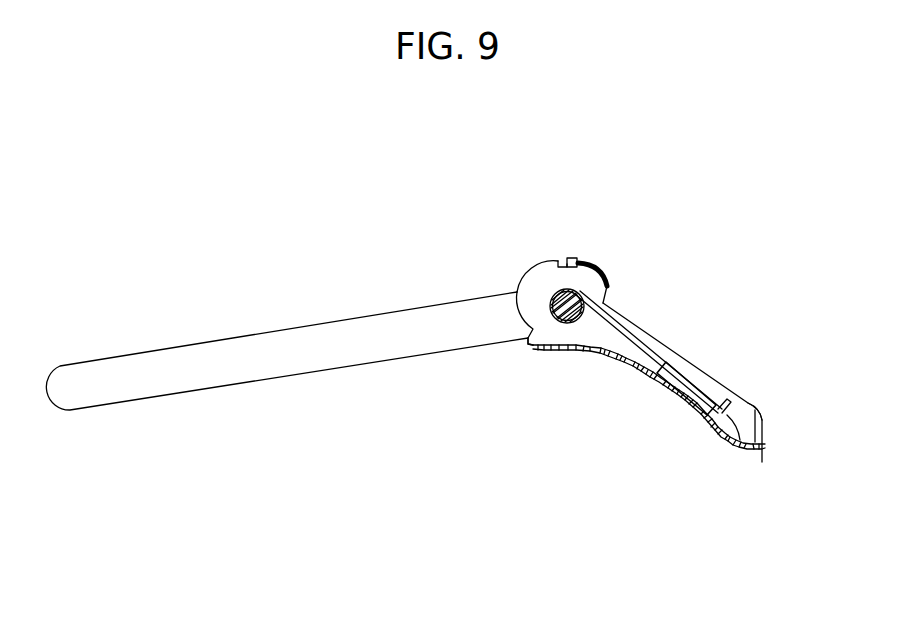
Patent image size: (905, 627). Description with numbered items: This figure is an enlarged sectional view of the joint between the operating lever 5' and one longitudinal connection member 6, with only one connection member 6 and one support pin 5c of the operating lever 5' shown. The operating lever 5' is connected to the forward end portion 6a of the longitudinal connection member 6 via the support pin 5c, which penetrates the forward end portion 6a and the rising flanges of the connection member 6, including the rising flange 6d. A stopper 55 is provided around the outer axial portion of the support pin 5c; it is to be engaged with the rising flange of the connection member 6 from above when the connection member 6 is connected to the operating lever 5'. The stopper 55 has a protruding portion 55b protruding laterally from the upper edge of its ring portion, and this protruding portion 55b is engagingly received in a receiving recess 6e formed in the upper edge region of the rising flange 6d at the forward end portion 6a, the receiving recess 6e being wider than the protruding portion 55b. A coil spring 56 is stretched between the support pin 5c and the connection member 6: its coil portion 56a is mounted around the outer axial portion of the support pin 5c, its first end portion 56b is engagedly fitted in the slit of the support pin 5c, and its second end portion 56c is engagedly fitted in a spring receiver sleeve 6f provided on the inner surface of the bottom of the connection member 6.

The operating lever 5' is at (287, 314).
The support pin 5c is at (529, 345).
The longitudinal connection member 6 is at (723, 438).
The forward end portion 6a is at (513, 273).
The rising flange 6d is at (725, 392).
The receiving recess 6e is at (563, 258).
The spring receiver sleeve 6f is at (690, 364).
The stopper 55 is at (595, 265).
The protruding portion 55b is at (613, 280).
The coil spring 56 is at (640, 342).
The coil portion 56a is at (573, 258).
The first end portion 56b is at (570, 325).
The second end portion 56c is at (743, 445).